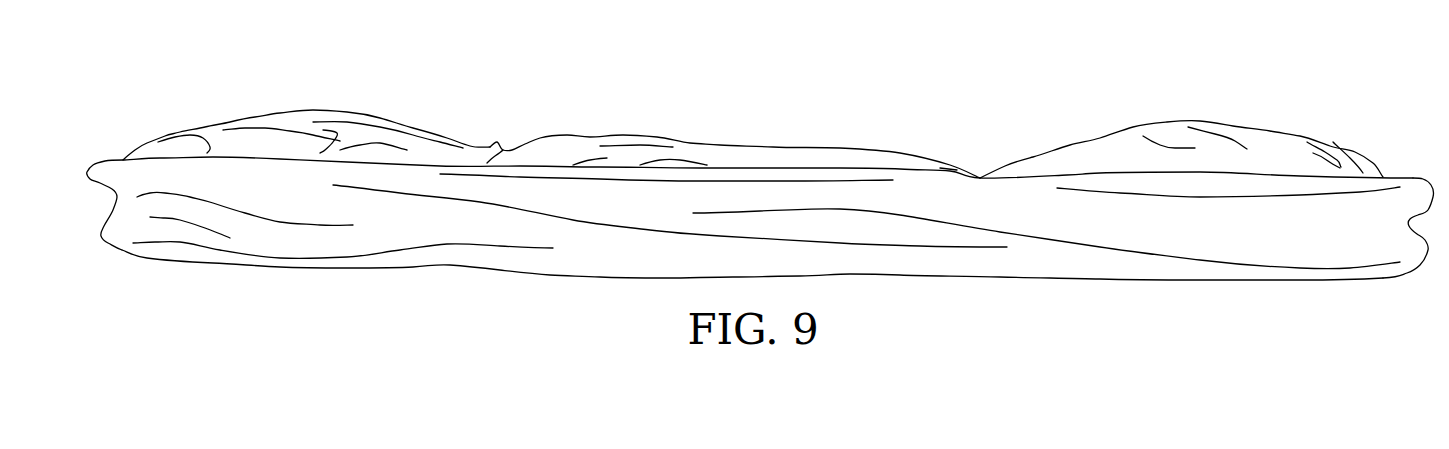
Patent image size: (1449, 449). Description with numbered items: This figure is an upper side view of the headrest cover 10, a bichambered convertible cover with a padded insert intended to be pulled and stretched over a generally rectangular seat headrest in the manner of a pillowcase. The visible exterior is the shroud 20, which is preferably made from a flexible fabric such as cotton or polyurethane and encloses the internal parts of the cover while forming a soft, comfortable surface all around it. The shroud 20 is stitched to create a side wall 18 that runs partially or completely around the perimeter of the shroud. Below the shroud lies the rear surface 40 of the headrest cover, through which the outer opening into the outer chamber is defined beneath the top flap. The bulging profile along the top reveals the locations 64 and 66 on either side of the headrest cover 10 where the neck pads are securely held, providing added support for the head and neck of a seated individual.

The headrest cover 10 is at (598, 58).
The side wall 18 is at (1417, 190).
The shroud 20 is at (842, 140).
The rear surface 40 is at (472, 280).
The neck pad location 64 is at (1215, 121).
The neck pad location 66 is at (294, 109).